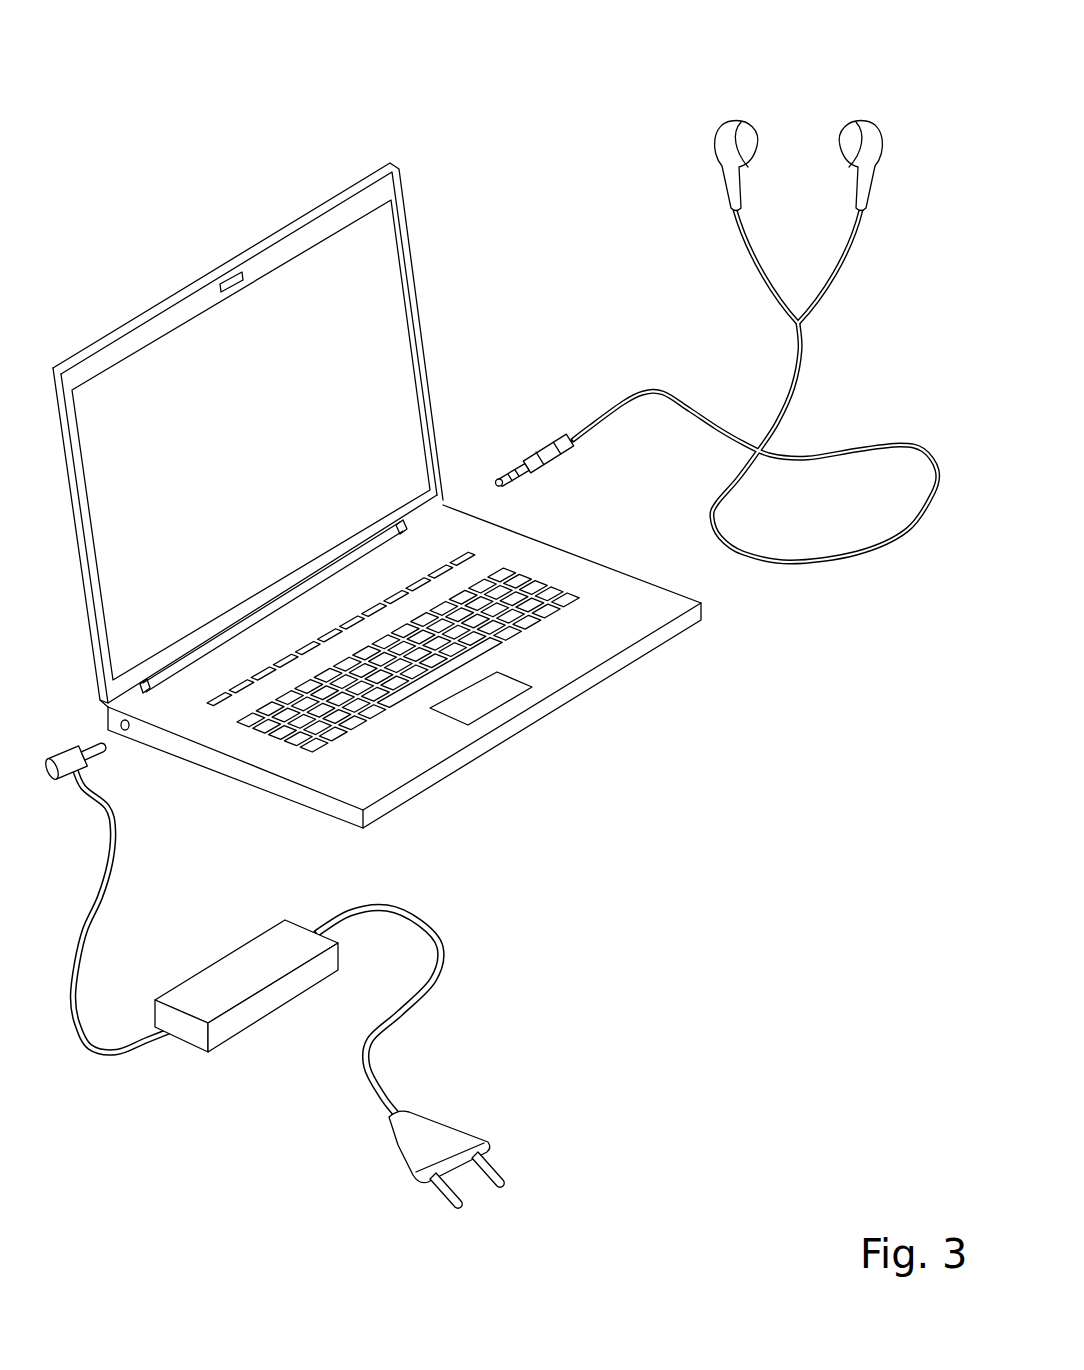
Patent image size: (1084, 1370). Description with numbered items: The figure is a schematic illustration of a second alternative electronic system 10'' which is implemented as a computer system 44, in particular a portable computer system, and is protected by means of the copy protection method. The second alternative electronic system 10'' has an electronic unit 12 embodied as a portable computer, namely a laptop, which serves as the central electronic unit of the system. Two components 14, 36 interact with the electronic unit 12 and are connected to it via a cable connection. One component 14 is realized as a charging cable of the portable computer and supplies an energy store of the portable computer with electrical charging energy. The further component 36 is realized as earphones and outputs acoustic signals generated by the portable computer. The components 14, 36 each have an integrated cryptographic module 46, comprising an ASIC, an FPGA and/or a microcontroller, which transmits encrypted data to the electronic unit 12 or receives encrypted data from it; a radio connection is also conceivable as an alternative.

The electronic unit 12 is at (372, 272).
The component 36 is at (866, 150).
The cryptographic module 46 is at (545, 440).
The component 14 is at (227, 987).
The computer system 44 is at (619, 890).
The second alternative electronic system 10'' is at (749, 935).